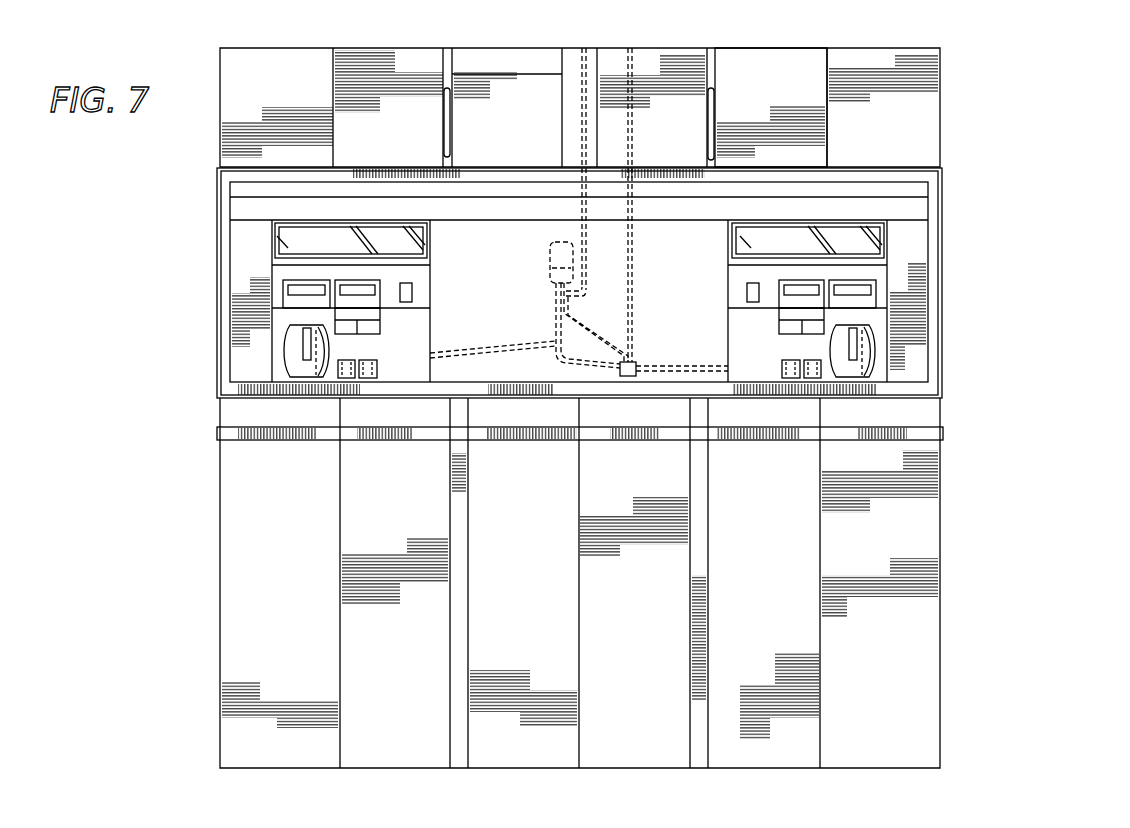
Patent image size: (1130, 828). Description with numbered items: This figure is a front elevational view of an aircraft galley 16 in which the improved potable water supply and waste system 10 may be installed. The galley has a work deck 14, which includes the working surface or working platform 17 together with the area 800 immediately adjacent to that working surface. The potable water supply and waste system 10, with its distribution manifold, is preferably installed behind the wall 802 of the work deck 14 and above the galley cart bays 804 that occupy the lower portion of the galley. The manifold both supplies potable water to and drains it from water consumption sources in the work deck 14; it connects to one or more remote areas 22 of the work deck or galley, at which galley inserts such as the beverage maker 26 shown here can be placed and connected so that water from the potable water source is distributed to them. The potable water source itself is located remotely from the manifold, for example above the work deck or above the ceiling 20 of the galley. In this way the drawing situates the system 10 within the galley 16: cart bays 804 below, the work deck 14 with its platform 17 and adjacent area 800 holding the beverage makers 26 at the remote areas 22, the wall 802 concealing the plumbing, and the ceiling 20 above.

The potable water supply and waste system 10 is at (530, 294).
The work deck 14 is at (958, 330).
The aircraft galley 16 is at (964, 153).
The working platform 17 is at (562, 386).
The ceiling 20 is at (791, 48).
The remote area 22 is at (296, 395).
The beverage maker 26 is at (345, 278).
The area immediately adjacent to the working surface 800 is at (158, 183).
The wall 802 is at (516, 232).
The galley cart bays 804 is at (287, 630).